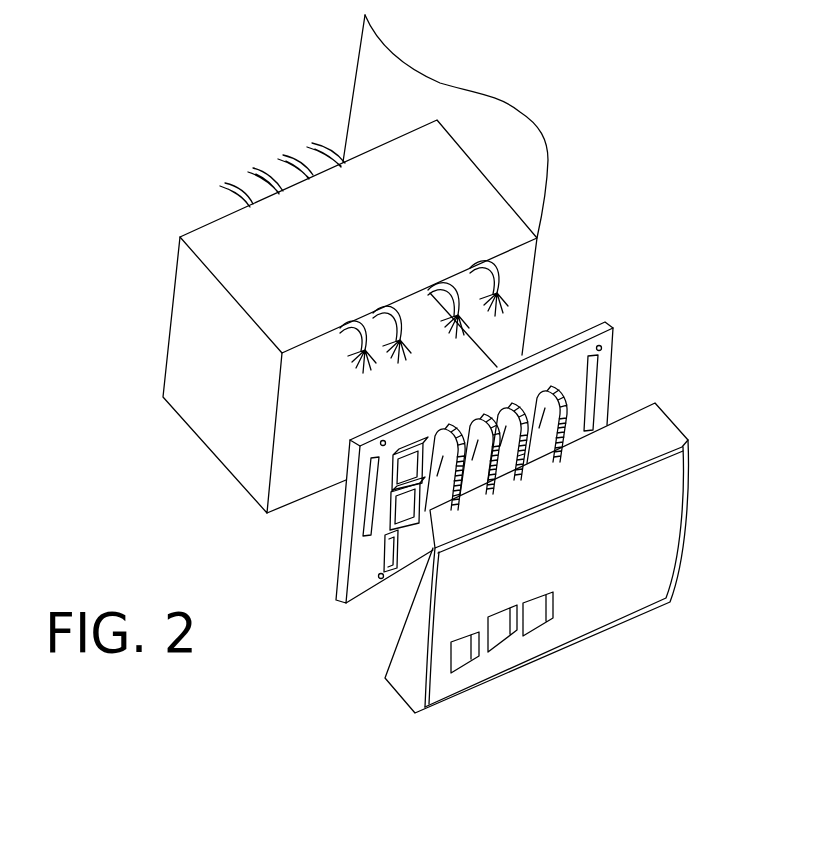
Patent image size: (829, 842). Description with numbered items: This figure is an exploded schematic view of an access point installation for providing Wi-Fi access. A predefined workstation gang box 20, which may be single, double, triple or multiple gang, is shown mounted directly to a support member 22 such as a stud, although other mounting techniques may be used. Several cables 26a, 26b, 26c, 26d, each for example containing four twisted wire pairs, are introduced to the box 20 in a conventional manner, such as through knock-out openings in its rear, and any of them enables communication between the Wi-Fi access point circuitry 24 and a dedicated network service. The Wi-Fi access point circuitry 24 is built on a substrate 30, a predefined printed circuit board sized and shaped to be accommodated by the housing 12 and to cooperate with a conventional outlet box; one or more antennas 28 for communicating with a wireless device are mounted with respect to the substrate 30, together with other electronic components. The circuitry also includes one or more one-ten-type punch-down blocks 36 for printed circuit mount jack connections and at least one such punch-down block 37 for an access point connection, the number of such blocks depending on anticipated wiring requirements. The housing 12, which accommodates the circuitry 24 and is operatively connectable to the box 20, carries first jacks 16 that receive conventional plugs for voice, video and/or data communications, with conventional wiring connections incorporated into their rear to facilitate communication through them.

The housing 12 is at (572, 558).
The first jacks 16 is at (385, 546).
The workstation gang box 20 is at (197, 353).
The support member 22 is at (520, 160).
The Wi-Fi access point circuitry 24 is at (493, 470).
The cable 26a is at (230, 193).
The cable 26b is at (263, 177).
The cable 26c is at (305, 170).
The cable 26d is at (325, 147).
The antenna 28 is at (597, 388).
The substrate 30 is at (383, 481).
The 110 blocks 36 is at (452, 491).
The 110 block 37 is at (537, 410).